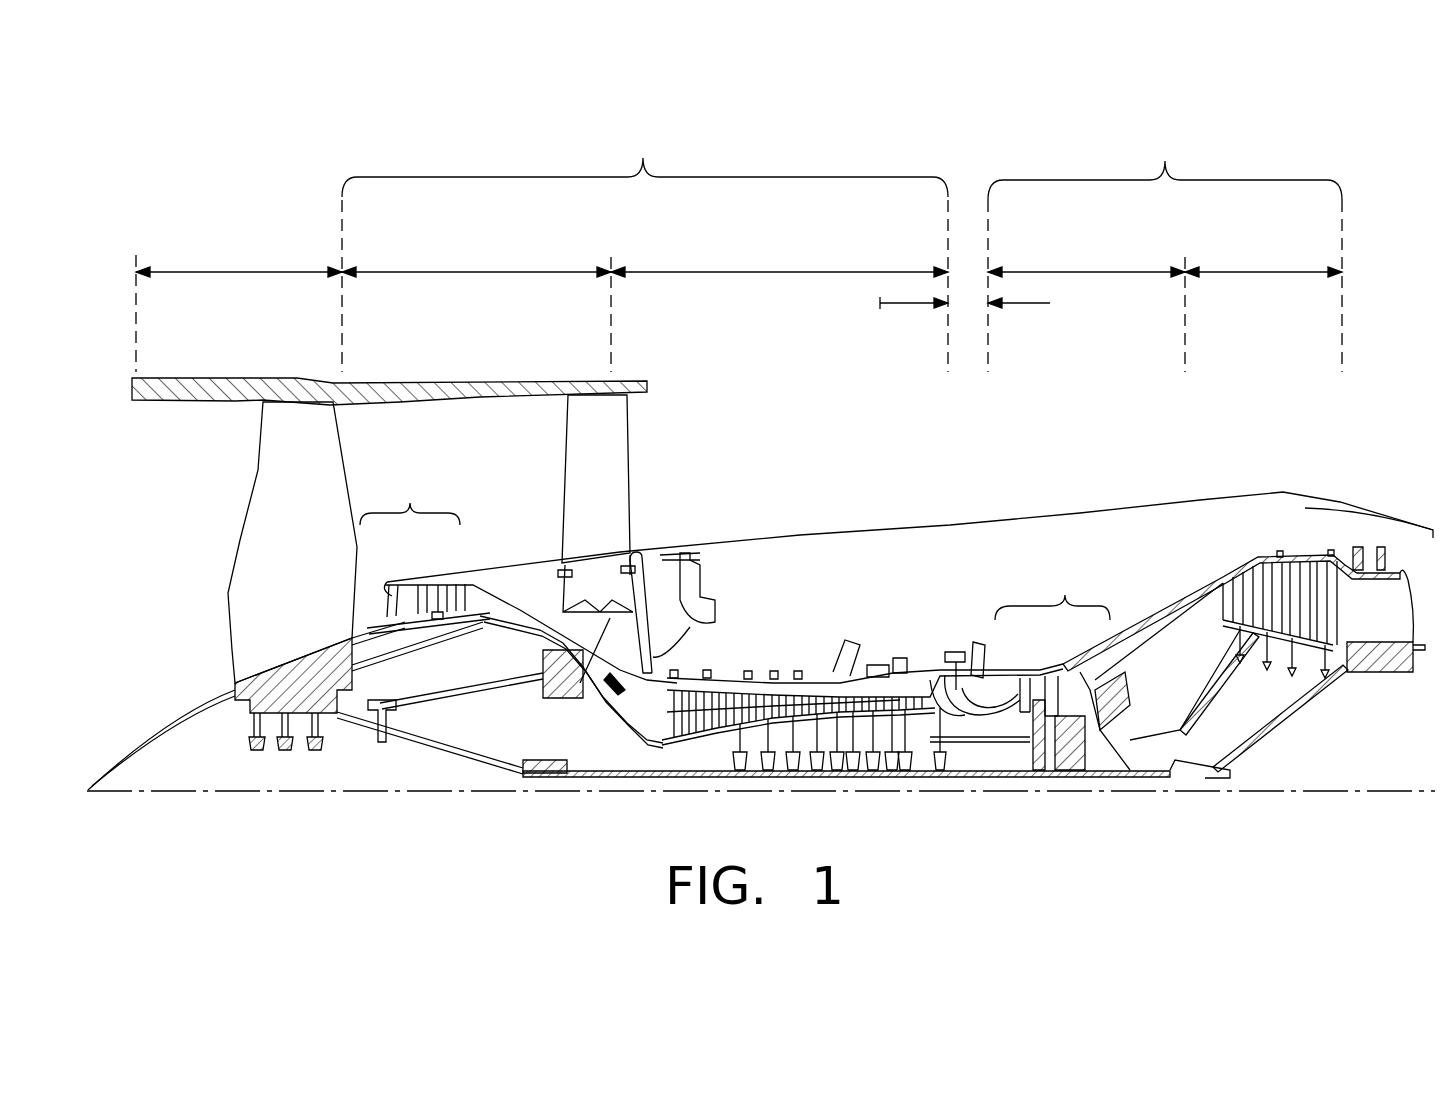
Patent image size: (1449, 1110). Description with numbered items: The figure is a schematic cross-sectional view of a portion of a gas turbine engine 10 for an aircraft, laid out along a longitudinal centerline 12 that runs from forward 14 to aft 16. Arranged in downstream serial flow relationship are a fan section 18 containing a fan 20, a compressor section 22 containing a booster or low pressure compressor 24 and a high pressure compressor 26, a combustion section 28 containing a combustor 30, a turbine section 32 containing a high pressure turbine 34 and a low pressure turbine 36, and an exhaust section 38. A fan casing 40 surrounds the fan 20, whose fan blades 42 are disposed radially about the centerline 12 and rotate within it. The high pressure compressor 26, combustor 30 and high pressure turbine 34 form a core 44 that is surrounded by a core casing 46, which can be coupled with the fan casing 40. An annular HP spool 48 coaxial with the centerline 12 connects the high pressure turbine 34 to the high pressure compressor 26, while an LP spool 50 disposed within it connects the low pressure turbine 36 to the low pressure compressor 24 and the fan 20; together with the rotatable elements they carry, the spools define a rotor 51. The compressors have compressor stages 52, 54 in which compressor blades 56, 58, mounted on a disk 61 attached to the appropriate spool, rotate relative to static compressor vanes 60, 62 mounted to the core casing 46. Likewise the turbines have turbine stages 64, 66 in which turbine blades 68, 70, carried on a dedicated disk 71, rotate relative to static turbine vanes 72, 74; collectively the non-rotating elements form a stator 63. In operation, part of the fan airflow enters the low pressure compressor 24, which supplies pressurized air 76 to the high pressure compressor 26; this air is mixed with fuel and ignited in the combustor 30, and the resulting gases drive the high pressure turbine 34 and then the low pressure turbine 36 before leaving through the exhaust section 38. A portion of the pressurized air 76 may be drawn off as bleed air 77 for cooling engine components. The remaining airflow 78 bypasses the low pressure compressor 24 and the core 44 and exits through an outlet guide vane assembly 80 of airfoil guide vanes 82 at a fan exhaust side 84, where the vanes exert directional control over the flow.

The gas turbine engine 10 is at (1365, 300).
The centerline 12 is at (217, 791).
The forward 14 is at (136, 516).
The aft 16 is at (1414, 616).
The fan section 18 is at (240, 272).
The fan 20 is at (205, 640).
The compressor section 22 is at (643, 158).
The low pressure compressor 24 is at (478, 272).
The high pressure compressor 26 is at (780, 272).
The combustion section 28 is at (880, 305).
The combustor 30 is at (975, 645).
The turbine section 32 is at (1165, 161).
The high pressure turbine 34 is at (1090, 272).
The low pressure turbine 36 is at (1262, 272).
The exhaust section 38 is at (1410, 583).
The fan casing 40 is at (372, 380).
The fan blades 42 is at (310, 438).
The core 44 is at (915, 555).
The core casing 46 is at (1170, 580).
The HP spool 48 is at (945, 777).
The LP spool 50 is at (545, 773).
The rotor 51 is at (812, 785).
The compressor stages 52 is at (410, 503).
The compressor stages 54 is at (778, 612).
The compressor blades 56 is at (418, 585).
The compressor blades 58 is at (720, 680).
The static compressor vanes 60 is at (398, 585).
The disk 61 is at (435, 622).
The static compressor vanes 62 is at (680, 690).
The stator 63 is at (1237, 540).
The turbine stages 64 is at (1075, 580).
The turbine stages 66 is at (1318, 497).
The turbine blades 68 is at (1052, 676).
The turbine blades 70 is at (1320, 560).
The disk 71 is at (1292, 670).
The static turbine vanes 72 is at (1028, 660).
The static turbine vanes 74 is at (1290, 560).
The pressurized air 76 is at (585, 700).
The bleed air 77 is at (812, 650).
The airflow 78 is at (660, 450).
The outlet guide vane assembly 80 is at (662, 512).
The airfoil guide vanes 82 is at (562, 495).
The fan exhaust side 84 is at (660, 422).